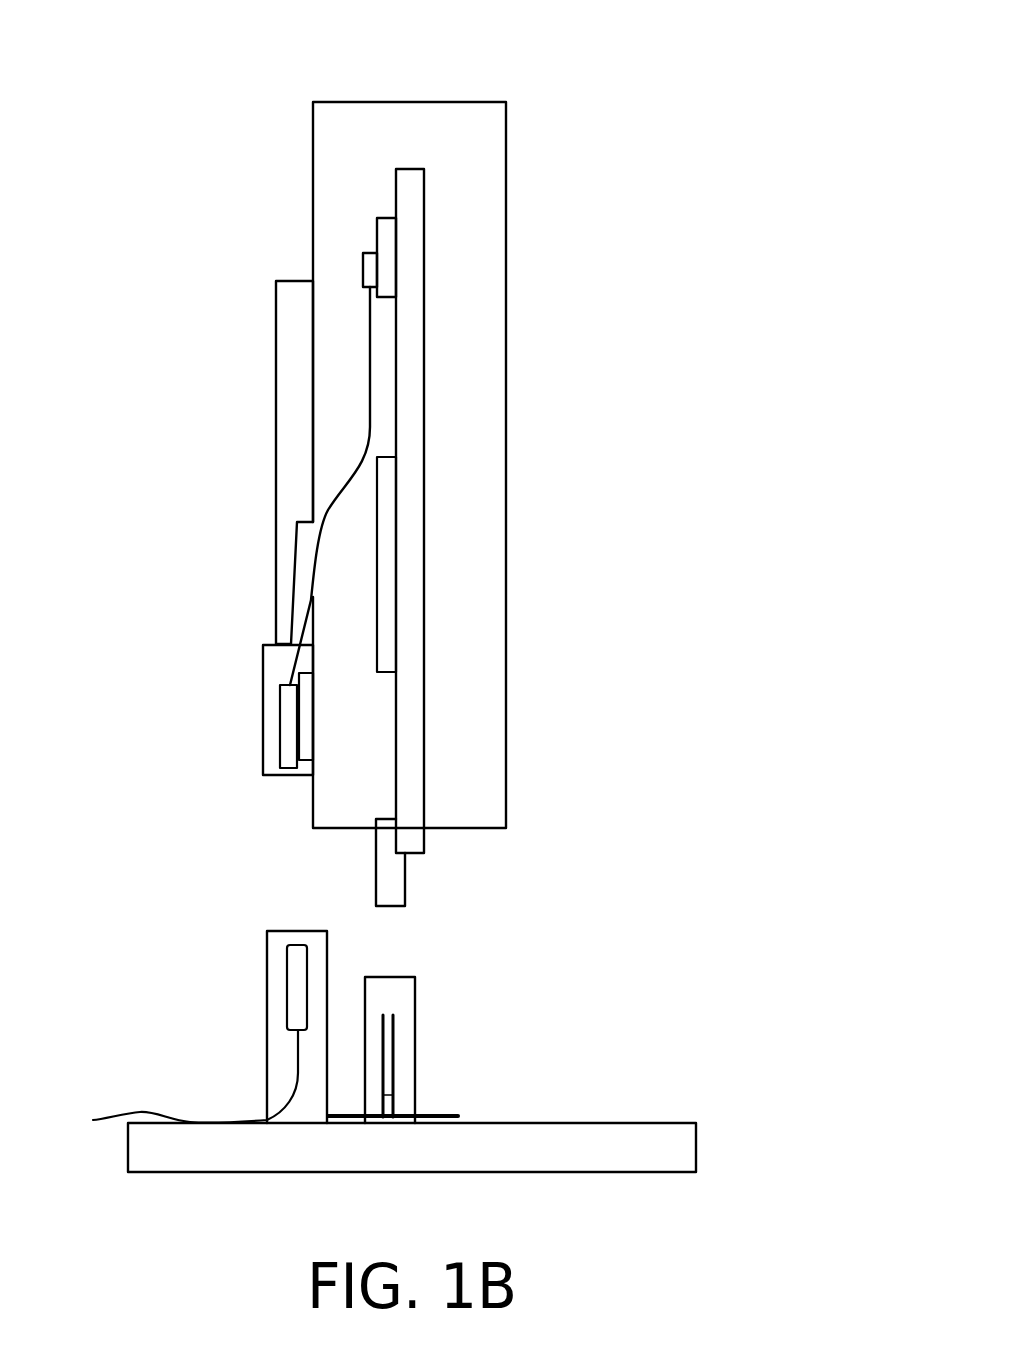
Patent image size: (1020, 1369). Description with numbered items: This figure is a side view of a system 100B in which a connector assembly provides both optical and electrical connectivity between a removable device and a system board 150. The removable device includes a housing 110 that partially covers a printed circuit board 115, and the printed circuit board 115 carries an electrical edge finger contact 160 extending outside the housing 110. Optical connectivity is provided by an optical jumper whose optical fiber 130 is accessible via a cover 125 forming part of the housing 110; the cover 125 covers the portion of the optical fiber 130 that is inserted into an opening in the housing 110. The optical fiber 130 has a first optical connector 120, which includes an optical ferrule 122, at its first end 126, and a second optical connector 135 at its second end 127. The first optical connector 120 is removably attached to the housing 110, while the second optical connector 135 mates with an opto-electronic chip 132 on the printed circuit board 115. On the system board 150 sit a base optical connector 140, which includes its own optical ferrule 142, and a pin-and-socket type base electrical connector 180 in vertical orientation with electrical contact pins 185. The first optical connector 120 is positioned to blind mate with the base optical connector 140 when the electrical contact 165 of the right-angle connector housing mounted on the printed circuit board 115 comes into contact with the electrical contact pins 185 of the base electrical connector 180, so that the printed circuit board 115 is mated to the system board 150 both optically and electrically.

The system 100B is at (540, 87).
The housing 110 is at (506, 287).
The printed circuit board 115 is at (425, 446).
The first optical connector 120 is at (262, 702).
The optical ferrule 122 is at (287, 768).
The cover 125 is at (276, 423).
The first end 126 is at (223, 746).
The second end 127 is at (365, 232).
The optical fiber 130 is at (367, 345).
The opto-electronic chip 132 is at (388, 218).
The second optical connector 135 is at (362, 272).
The base optical connector 140 is at (267, 1028).
The optical ferrule 142 is at (295, 963).
The system board 150 is at (698, 1145).
The electrical edge finger contact 160 is at (423, 855).
The electrical contact 165 is at (405, 888).
The base electrical connector 180 is at (417, 1055).
The electrical contact pins 185 is at (363, 1117).